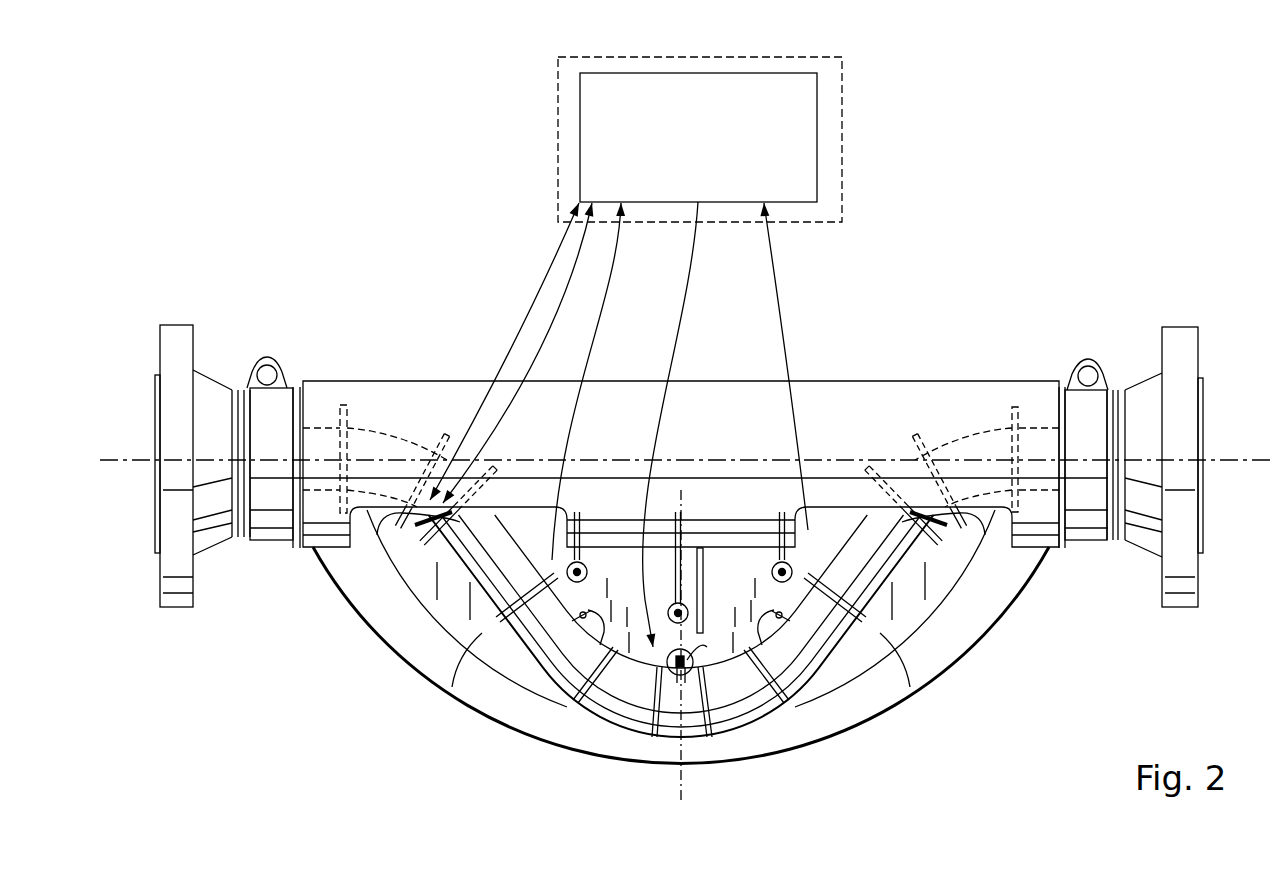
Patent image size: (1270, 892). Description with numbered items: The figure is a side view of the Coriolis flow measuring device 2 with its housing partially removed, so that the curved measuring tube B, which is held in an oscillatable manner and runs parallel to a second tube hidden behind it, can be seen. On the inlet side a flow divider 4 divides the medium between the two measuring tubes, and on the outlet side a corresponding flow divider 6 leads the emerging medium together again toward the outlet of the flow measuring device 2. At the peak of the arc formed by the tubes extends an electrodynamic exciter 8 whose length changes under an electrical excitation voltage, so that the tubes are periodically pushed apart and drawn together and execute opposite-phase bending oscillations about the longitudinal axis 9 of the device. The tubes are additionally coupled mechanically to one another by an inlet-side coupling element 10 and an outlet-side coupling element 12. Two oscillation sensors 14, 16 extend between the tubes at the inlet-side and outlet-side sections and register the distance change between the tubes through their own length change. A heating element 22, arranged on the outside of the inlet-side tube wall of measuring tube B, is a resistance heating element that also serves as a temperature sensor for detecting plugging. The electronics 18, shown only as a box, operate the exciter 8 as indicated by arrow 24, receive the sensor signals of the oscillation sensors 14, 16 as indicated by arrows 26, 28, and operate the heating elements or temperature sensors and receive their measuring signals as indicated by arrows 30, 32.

The flow measuring device 2 is at (1087, 173).
The flow divider 4 is at (270, 498).
The flow divider 6 is at (1088, 517).
The exciter 8 is at (690, 660).
The longitudinal axis 9 is at (1262, 463).
The coupling element 10 is at (363, 543).
The coupling element 12 is at (965, 535).
The oscillation sensor 14 is at (533, 727).
The oscillation sensor 16 is at (810, 688).
The electronics 18 is at (797, 160).
The heating element 22 is at (398, 527).
The arrow 24 is at (693, 293).
The arrow 26 is at (602, 312).
The arrow 28 is at (778, 313).
The arrow 30 is at (572, 278).
The arrow 32 is at (515, 328).
The measuring tube B is at (627, 690).